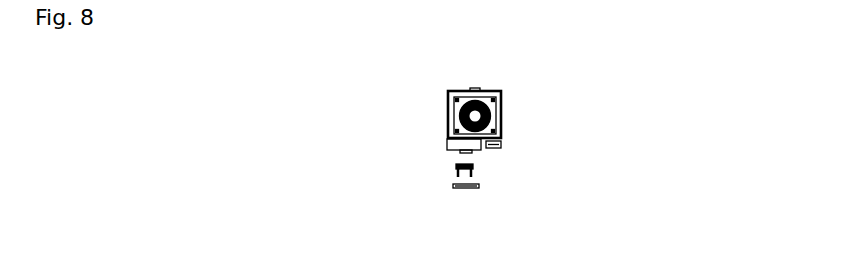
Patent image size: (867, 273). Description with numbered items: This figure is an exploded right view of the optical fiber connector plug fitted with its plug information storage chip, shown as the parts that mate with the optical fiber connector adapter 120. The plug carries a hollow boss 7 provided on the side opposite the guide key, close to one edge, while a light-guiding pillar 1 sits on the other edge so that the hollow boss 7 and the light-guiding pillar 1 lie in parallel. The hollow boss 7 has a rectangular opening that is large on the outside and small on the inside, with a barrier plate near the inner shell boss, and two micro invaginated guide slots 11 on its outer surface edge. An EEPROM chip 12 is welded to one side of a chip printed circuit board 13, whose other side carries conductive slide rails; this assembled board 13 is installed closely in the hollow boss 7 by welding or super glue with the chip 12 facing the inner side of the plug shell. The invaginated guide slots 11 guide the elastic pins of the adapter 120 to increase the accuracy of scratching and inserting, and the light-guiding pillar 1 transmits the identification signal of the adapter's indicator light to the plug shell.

The optical fiber connector adapter 120 is at (498, 137).
The light-guiding pillar 1 is at (503, 141).
The hollow boss 7 is at (445, 142).
The invaginated guide slots 11 is at (457, 153).
The EEPROM chip 12 is at (477, 167).
The chip printed circuit board 13 is at (552, 200).